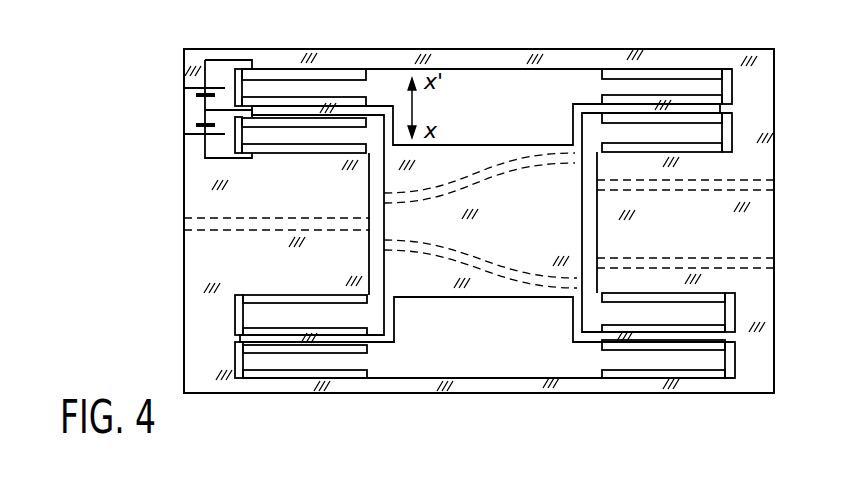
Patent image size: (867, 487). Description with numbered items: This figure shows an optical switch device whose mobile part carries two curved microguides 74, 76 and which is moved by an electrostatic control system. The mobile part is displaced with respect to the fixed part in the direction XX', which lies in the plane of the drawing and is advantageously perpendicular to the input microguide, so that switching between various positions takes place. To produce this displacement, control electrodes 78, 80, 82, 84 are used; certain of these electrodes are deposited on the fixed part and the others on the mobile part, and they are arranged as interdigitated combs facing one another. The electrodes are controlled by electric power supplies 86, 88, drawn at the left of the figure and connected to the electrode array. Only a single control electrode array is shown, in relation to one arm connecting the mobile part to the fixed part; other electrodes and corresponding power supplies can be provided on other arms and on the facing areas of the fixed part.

The first output waveguide 74 is at (537, 164).
The second output waveguide 76 is at (505, 268).
The control electrode 78 is at (278, 75).
The control electrode 80 is at (332, 105).
The control electrode 82 is at (334, 124).
The control electrode 84 is at (270, 153).
The electric power supply 86 is at (185, 134).
The electric power supply 88 is at (185, 89).